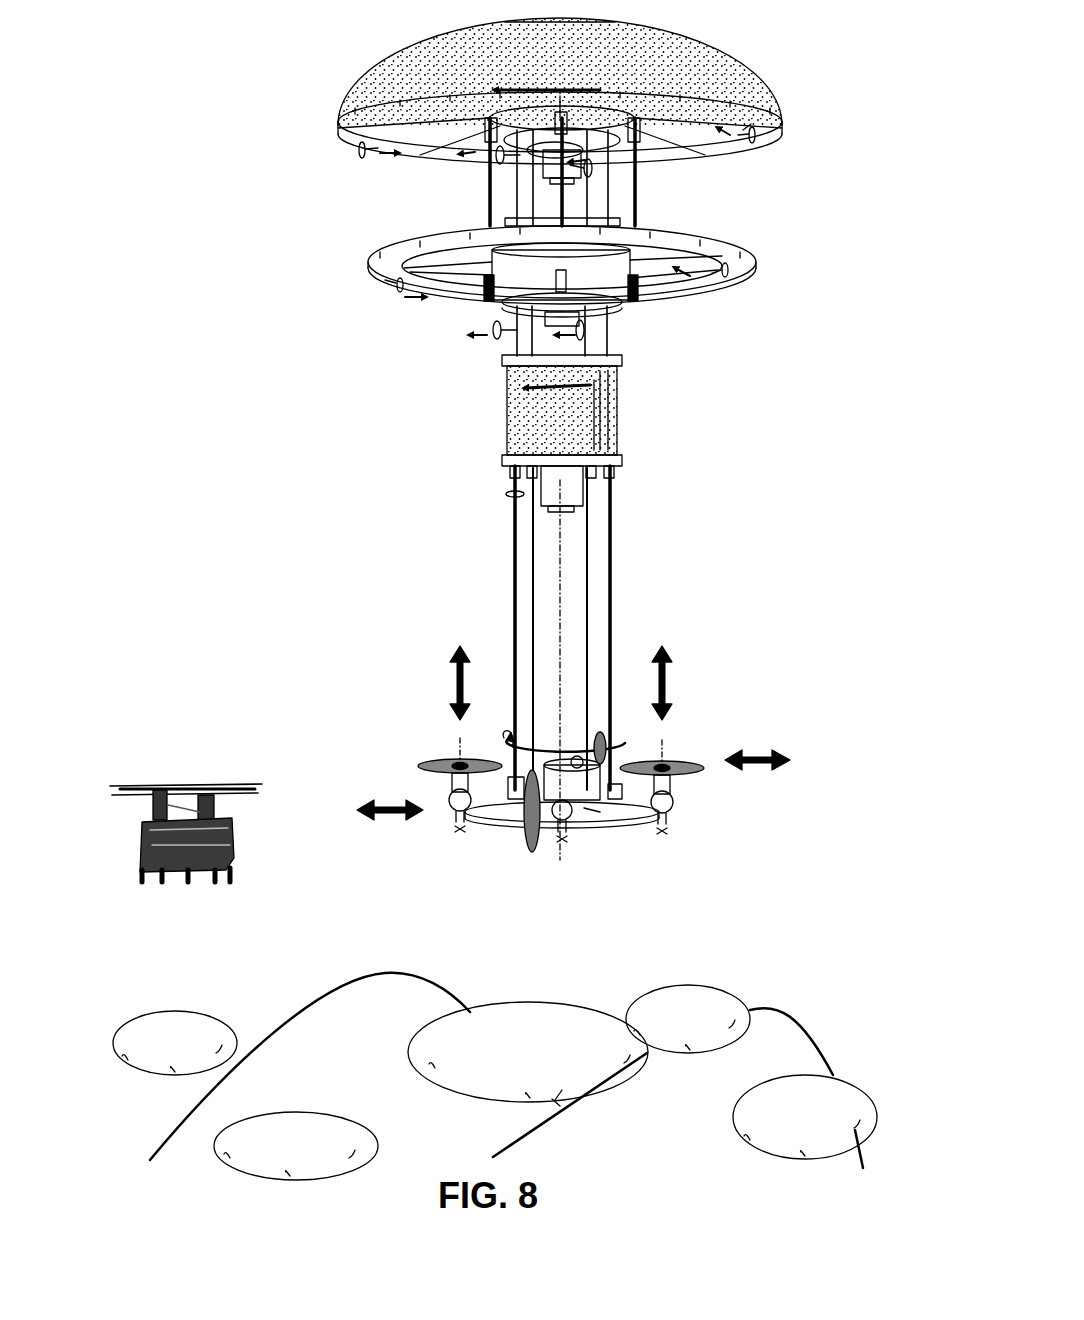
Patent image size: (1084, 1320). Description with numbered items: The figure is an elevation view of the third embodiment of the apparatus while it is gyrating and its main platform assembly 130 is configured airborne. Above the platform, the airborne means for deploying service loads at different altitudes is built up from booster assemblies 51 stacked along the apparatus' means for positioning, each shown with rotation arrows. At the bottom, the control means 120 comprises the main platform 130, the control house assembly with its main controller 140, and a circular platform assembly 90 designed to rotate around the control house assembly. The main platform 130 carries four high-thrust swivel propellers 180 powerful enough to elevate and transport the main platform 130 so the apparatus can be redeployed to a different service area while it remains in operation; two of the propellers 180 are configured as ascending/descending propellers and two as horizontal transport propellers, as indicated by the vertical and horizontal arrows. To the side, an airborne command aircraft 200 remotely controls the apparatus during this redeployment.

The booster assembly 51 is at (640, 163).
The circular platform assembly 90 is at (512, 804).
The means for controlling the apparatus 120 is at (575, 808).
The main platform assembly 130 is at (524, 808).
The main controller 140 is at (515, 758).
The high-thrust swivel propellers 180 is at (430, 765).
The airborne command aircraft 200 is at (217, 875).